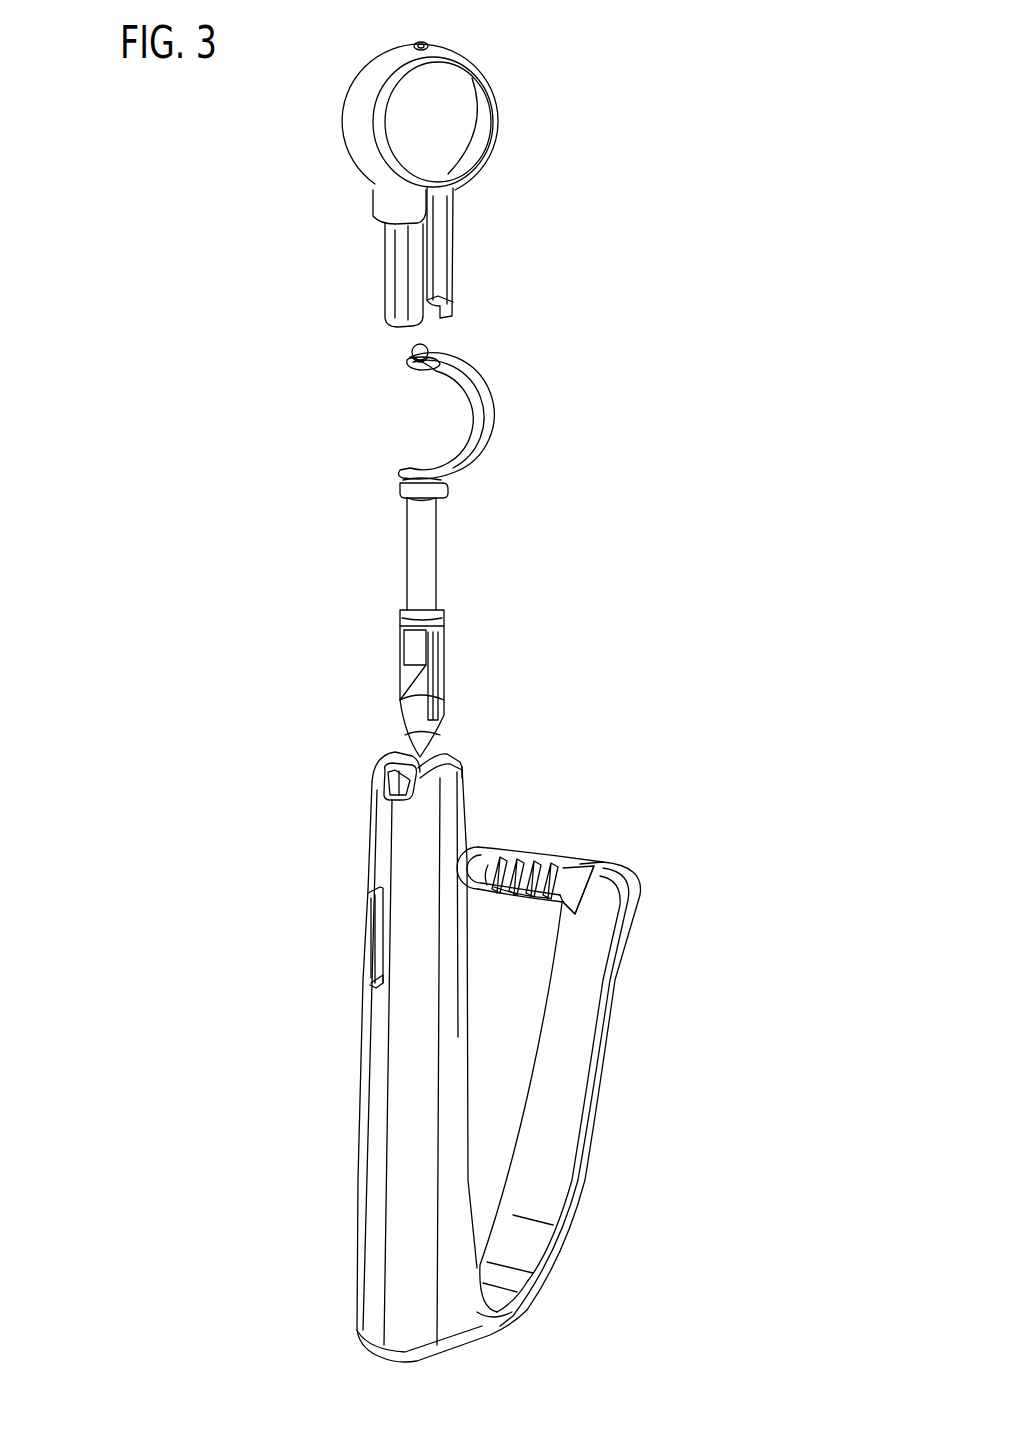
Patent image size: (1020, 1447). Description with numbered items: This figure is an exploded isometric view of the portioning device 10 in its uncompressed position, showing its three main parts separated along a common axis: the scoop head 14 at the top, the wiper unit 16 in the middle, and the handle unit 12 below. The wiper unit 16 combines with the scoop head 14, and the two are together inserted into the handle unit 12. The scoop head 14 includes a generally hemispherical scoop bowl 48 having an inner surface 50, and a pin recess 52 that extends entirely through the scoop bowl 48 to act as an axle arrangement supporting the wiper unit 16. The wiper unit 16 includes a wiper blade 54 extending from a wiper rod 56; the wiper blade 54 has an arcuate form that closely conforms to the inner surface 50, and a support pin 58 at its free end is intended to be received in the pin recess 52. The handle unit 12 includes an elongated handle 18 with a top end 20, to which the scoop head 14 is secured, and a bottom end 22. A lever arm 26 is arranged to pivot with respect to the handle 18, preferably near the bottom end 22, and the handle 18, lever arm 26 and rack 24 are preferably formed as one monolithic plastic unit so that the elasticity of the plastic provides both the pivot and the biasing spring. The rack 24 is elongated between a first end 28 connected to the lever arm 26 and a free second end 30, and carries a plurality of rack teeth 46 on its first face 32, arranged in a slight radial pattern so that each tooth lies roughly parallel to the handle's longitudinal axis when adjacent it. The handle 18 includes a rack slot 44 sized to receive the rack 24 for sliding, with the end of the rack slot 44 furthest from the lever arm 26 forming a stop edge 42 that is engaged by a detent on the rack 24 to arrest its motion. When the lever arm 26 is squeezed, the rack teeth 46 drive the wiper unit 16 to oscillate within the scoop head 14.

The portioning device 10 is at (665, 78).
The handle unit 12 is at (342, 1166).
The scoop head 14 is at (338, 149).
The wiper unit 16 is at (386, 598).
The handle 18 is at (410, 1106).
The top end 20 is at (372, 790).
The bottom end 22 is at (358, 1344).
The rack 24 is at (538, 843).
The lever arm 26 is at (574, 1077).
The first end 28 is at (582, 873).
The second end 30 is at (479, 835).
The first face 32 is at (564, 906).
The stop edge 42 is at (368, 898).
The rack slot 44 is at (370, 955).
The rack teeth 46 is at (518, 892).
The scoop bowl 48 is at (363, 93).
The inner surface 50 is at (448, 122).
The pin recess 52 is at (424, 42).
The wiper blade 54 is at (458, 448).
The wiper rod 56 is at (423, 559).
The support pin 58 is at (432, 349).